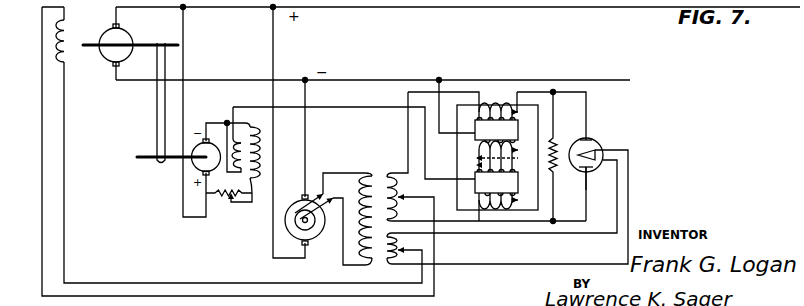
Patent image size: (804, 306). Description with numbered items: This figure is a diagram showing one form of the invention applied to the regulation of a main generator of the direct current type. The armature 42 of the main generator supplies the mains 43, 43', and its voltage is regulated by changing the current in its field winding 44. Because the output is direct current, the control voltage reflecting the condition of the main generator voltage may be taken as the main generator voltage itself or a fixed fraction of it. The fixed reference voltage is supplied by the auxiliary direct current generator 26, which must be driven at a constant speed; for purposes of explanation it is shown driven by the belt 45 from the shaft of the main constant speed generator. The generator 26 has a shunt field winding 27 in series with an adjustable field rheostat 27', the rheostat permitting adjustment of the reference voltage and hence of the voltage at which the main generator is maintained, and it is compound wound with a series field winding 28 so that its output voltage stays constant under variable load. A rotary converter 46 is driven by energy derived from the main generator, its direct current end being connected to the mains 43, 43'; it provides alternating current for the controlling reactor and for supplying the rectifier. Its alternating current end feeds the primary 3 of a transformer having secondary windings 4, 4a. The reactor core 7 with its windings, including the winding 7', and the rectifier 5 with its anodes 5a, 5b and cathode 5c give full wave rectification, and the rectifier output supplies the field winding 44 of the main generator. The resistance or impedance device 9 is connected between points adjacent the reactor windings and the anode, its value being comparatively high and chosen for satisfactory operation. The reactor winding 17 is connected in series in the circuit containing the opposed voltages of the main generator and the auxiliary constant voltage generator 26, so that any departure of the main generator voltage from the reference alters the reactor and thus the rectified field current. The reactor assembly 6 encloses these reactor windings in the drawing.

The main 43 is at (421, 17).
The main 43' is at (373, 69).
The field winding 44 is at (70, 35).
The armature 42 is at (125, 38).
The belt 45 is at (156, 113).
The direct current generator 26 is at (196, 162).
The series field winding 28 is at (238, 140).
The shunt field winding 27 is at (260, 173).
The adjustable field rheostat 27' is at (229, 210).
The rotary converter 46 is at (323, 240).
The primary winding 3 is at (371, 177).
The secondary winding 4 is at (398, 183).
The secondary winding 4a is at (399, 246).
The relay 6 is at (457, 152).
The reactor core 7 is at (498, 102).
The winding 17 is at (514, 136).
The winding 7' is at (496, 212).
The resistance or impedance device 9 is at (556, 143).
The rectifier 5 is at (603, 144).
The anode 5a is at (592, 139).
The anode 5b is at (589, 173).
The cathode 5c is at (582, 169).